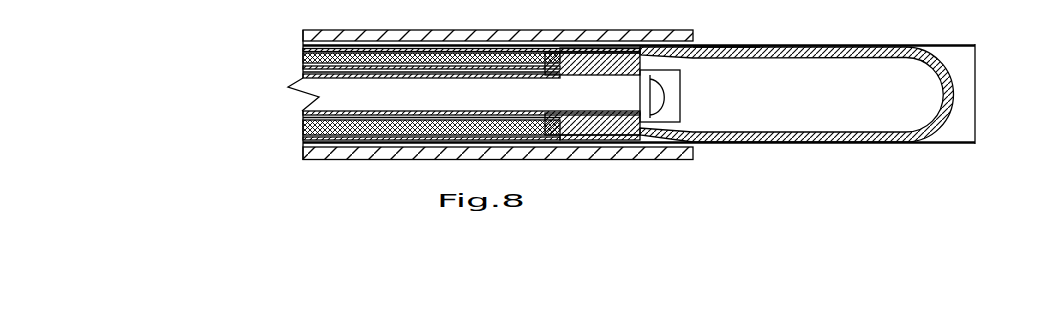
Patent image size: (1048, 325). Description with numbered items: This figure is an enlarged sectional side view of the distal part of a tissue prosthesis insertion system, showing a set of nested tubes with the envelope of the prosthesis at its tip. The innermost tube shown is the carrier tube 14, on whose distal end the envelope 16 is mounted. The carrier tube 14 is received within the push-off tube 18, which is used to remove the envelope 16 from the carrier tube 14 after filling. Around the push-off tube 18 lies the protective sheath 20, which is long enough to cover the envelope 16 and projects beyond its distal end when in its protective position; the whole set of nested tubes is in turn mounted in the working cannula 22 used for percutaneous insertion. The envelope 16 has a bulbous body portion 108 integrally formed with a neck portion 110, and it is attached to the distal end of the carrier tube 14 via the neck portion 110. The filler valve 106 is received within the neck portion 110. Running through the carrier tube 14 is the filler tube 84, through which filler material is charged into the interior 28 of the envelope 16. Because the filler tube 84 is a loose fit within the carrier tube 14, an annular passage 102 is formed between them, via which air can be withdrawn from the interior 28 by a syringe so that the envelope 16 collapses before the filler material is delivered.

The carrier tube 14 is at (437, 70).
The envelope 16 is at (947, 70).
The push-off tube 18 is at (410, 55).
The protective sheath 20 is at (942, 144).
The working cannula 22 is at (333, 161).
The interior 28 is at (847, 110).
The filler tube 84 is at (412, 112).
The annular passage 102 is at (303, 117).
The filler valve 106 is at (675, 110).
The bulbous body portion 108 is at (770, 56).
The neck portion 110 is at (585, 134).